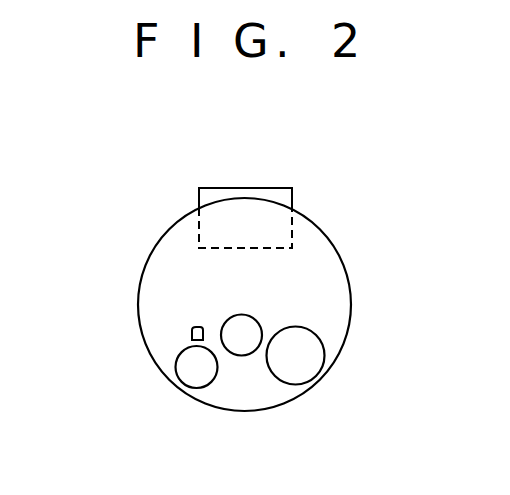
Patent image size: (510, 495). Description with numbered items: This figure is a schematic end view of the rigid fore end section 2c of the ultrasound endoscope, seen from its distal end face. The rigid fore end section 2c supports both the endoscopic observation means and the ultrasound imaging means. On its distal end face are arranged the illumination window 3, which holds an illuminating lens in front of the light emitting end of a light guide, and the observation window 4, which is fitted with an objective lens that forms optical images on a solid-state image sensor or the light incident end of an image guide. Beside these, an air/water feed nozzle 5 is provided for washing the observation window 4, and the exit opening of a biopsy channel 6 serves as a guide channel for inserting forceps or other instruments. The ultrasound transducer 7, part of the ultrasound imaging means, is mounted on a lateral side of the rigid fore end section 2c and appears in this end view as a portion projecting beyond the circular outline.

The rigid fore end section 2c is at (352, 303).
The illumination window 3 is at (238, 350).
The observation window 4 is at (190, 378).
The air/water feed nozzle 5 is at (192, 334).
The biopsy channel 6 is at (308, 372).
The ultrasound transducer 7 is at (198, 188).